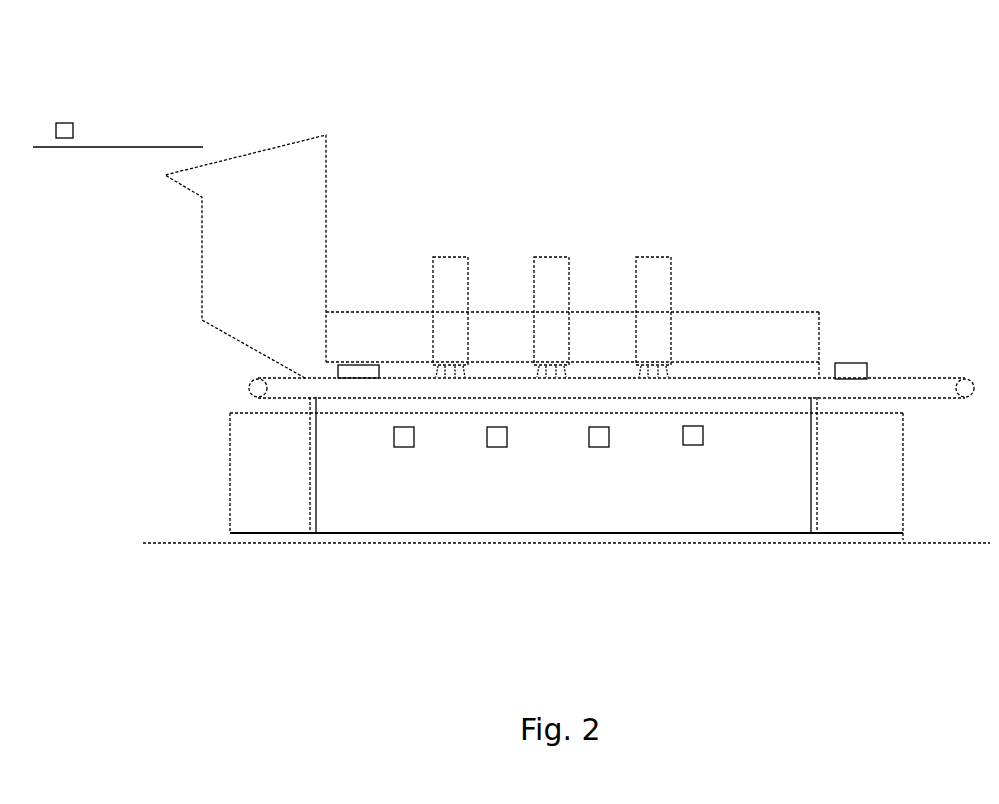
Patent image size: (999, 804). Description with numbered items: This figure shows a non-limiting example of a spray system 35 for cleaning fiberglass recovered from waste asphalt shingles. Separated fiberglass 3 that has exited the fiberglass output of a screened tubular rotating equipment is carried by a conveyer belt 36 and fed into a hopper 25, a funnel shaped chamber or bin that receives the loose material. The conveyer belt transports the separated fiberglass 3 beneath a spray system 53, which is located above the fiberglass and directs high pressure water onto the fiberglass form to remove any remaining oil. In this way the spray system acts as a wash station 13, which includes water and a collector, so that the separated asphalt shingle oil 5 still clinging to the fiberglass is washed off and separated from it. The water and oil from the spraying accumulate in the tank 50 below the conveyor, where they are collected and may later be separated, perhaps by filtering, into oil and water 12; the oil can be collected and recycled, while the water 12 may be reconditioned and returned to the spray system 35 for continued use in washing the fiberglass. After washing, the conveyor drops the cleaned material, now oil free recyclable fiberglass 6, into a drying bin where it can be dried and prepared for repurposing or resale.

The separated fiberglass 3 is at (68, 122).
The conveyer belt 36 is at (103, 147).
The hopper 25 is at (302, 175).
The spray system 53 is at (456, 278).
The wash station 13 is at (705, 263).
The water 12 is at (667, 373).
The spray system 35 is at (248, 387).
The oil free recyclable fiberglass 6 is at (853, 363).
The separated asphalt shingle oil 5 is at (687, 445).
The tank 50 is at (753, 517).